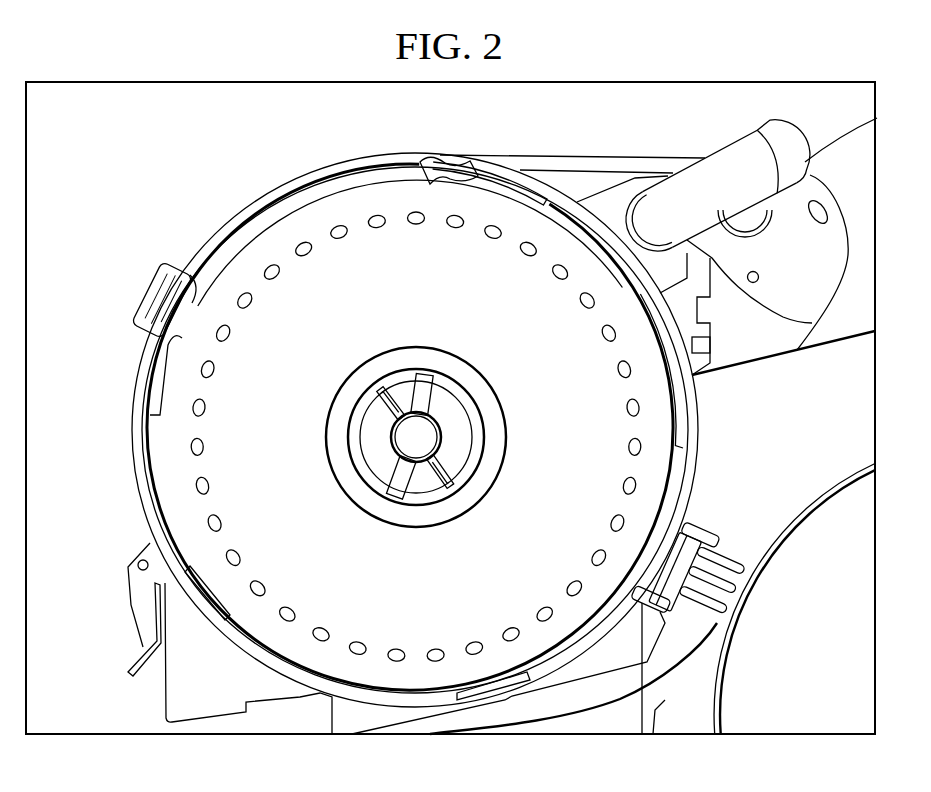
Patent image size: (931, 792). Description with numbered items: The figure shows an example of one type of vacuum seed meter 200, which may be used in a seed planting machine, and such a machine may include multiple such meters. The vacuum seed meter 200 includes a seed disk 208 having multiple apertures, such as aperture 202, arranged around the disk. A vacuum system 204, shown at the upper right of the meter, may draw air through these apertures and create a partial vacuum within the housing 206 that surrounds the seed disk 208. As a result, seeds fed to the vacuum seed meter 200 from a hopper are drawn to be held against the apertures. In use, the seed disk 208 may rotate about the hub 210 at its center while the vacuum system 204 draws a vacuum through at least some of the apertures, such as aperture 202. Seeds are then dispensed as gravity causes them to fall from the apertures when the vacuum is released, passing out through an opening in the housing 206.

The vacuum seed meter 200 is at (259, 83).
The aperture 202 is at (191, 452).
The vacuum system 204 is at (692, 150).
The housing 206 is at (268, 195).
The seed disk 208 is at (238, 451).
The hub 210 is at (420, 435).